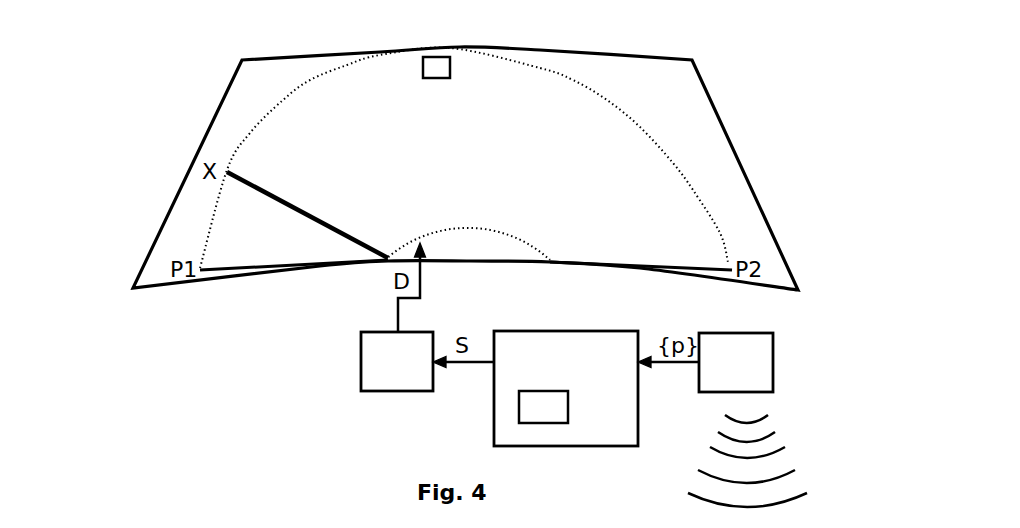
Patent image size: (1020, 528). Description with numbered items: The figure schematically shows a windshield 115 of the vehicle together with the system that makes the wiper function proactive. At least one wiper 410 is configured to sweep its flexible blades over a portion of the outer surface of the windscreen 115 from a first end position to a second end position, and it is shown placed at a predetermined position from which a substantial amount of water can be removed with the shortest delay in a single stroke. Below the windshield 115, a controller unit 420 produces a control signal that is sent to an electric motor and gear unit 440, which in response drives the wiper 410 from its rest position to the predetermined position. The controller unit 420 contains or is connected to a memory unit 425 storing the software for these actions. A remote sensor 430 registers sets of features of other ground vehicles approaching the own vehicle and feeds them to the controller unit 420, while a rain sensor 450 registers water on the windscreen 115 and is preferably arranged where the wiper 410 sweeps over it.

The windshield 115 is at (220, 105).
The wiper 410 is at (300, 208).
The rain sensor 450 is at (438, 62).
The electric motor and gear unit 440 is at (360, 362).
The controller unit 420 is at (540, 330).
The memory unit 425 is at (537, 390).
The remote sensor 430 is at (773, 360).